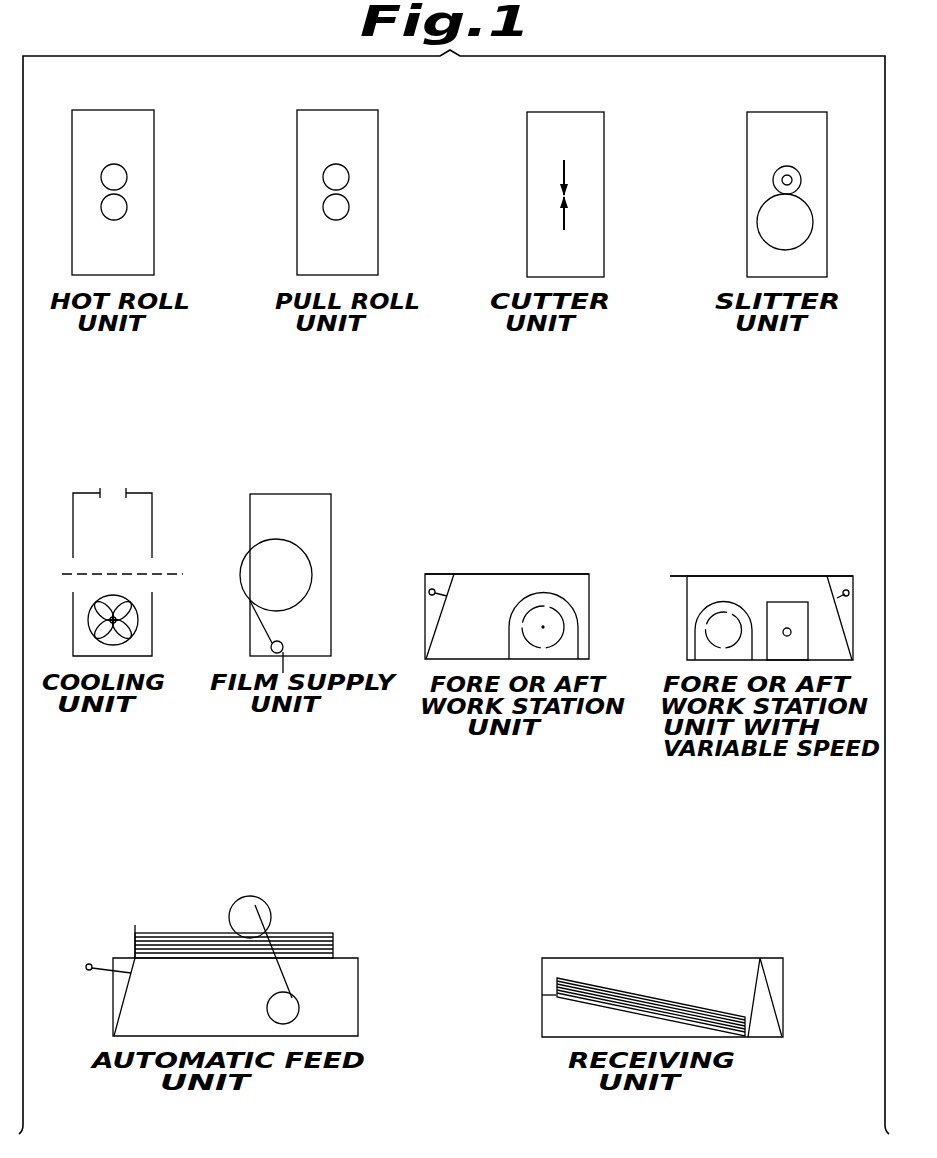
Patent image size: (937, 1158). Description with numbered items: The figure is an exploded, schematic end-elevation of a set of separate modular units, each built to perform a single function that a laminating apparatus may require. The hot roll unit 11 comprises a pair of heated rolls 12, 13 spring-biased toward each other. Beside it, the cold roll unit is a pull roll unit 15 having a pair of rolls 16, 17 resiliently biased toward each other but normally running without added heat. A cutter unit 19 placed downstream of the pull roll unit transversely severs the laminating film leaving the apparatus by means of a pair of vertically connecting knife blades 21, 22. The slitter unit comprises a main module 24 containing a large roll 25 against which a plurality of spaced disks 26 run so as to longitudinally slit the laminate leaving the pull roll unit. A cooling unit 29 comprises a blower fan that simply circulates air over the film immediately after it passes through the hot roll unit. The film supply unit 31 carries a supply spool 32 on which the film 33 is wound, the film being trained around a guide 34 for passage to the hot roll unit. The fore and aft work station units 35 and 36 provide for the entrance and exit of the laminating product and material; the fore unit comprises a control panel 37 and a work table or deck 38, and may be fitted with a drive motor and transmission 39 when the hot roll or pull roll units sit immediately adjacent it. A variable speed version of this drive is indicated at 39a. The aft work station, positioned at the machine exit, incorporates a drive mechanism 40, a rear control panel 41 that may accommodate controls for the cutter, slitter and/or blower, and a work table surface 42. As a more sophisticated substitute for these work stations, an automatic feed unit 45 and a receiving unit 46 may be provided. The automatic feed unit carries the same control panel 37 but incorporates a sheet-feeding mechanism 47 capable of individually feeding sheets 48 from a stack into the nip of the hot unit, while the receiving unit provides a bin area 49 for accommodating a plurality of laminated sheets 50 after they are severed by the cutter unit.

The hot roll unit 11 is at (128, 245).
The heated roll 12 is at (127, 207).
The heated roll 13 is at (127, 174).
The pull roll unit 15 is at (355, 250).
The roll 16 is at (349, 207).
The roll 17 is at (349, 177).
The cutter unit 19 is at (578, 253).
The knife blade 21 is at (567, 221).
The knife blade 22 is at (567, 178).
The slitter main module 24 is at (770, 258).
The large roll 25 is at (762, 208).
The spaced disks 26 is at (775, 174).
The cooling unit 29 is at (138, 641).
The film supply unit 31 is at (298, 637).
The supply spool 32 is at (245, 558).
The film 33 is at (278, 627).
The guide 34 is at (271, 642).
The fore work station unit 35 is at (474, 593).
The aft work station unit 36 is at (754, 595).
The control panel 37 is at (431, 607).
The work table or deck 38 is at (592, 574).
The drive motor and transmission 39 is at (566, 638).
The variable speed drive 39a is at (777, 607).
The drive mechanism 40 is at (710, 603).
The rear control panel 41 is at (847, 590).
The work table surface 42 is at (793, 575).
The automatic feed unit 45 is at (160, 972).
The receiving unit 46 is at (568, 1018).
The sheet-feeding mechanism 47 is at (290, 977).
The sheets 48 is at (310, 935).
The bin area 49 is at (705, 972).
The laminated sheets 50 is at (593, 985).